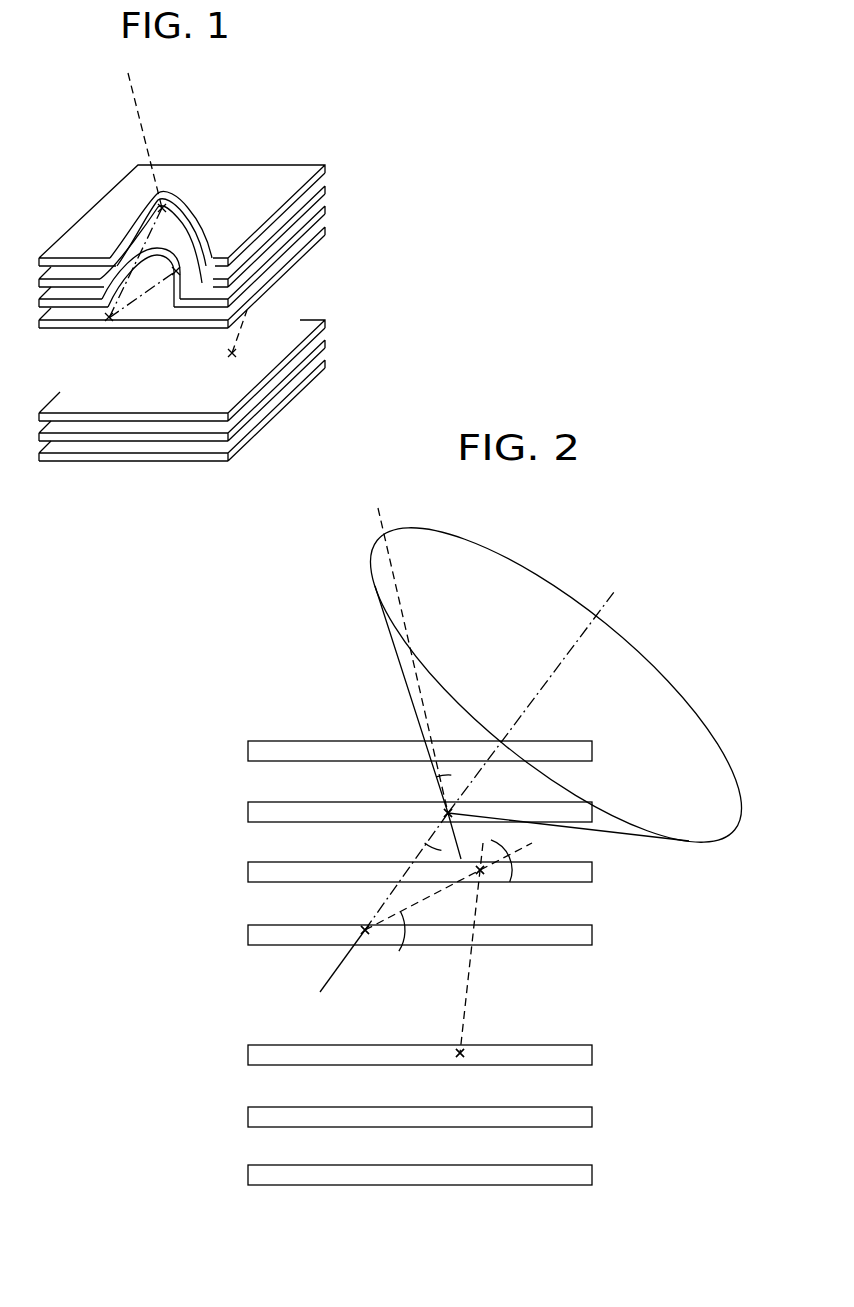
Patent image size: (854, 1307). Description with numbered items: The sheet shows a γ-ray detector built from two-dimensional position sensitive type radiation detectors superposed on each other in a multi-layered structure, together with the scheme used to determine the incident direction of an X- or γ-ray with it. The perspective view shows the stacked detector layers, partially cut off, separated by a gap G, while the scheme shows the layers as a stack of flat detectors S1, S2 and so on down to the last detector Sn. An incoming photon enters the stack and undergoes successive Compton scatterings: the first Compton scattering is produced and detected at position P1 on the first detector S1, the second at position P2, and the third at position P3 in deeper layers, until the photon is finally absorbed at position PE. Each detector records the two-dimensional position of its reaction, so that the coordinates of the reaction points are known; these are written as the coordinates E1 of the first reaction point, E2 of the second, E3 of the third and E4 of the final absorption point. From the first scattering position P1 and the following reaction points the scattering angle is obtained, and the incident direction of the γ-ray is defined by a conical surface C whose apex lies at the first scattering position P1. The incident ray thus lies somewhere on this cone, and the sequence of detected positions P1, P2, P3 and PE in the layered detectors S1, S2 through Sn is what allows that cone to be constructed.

In FIG. 1, the first Compton scattering position P1 is at (163, 206).
In FIG. 2, the first Compton scattering position P1 is at (447, 812).
In FIG. 1, the second Compton scattering position P2 is at (109, 318).
In FIG. 2, the second Compton scattering position P2 is at (365, 928).
In FIG. 1, the third Compton scattering position P3 is at (178, 271).
In FIG. 2, the third Compton scattering position P3 is at (465, 882).
In FIG. 1, the photon absorption position PE is at (232, 353).
In FIG. 2, the photon absorption position PE is at (456, 1055).
In FIG. 1, the gap G is at (43, 422).
In FIG. 2, the gap G is at (425, 965).
In FIG. 2, the conical surface C is at (645, 653).
In FIG. 2, the first two-dimensional position sensitive radiation detector S1 is at (594, 749).
In FIG. 2, the second two-dimensional position sensitive radiation detector S2 is at (594, 808).
In FIG. 2, the n-th two-dimensional position sensitive radiation detector Sn is at (593, 1177).
In FIG. 2, the coordinates of the first reaction point E1 is at (348, 796).
In FIG. 2, the coordinates of the second reaction point E2 is at (277, 915).
In FIG. 2, the coordinates of the third reaction point E3 is at (610, 857).
In FIG. 2, the coordinates of the fourth reaction point E4 is at (539, 1075).